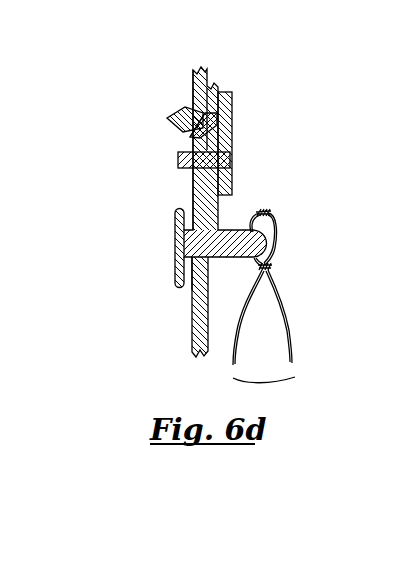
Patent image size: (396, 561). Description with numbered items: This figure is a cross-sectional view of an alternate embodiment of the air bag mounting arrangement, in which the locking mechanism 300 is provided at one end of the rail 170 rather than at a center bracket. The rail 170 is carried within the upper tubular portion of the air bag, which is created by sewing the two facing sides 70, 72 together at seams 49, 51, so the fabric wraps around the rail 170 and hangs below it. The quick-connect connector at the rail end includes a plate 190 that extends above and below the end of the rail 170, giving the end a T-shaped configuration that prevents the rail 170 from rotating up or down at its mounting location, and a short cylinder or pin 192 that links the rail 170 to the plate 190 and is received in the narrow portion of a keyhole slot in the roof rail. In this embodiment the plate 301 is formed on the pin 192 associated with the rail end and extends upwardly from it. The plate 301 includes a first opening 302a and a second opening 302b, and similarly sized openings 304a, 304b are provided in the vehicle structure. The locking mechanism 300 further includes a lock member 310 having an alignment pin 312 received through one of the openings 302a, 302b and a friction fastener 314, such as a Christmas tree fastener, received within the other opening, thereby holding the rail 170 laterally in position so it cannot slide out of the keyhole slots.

The locking mechanism 300 is at (160, 198).
The plate 301 is at (172, 212).
The first opening 302a is at (190, 192).
The second opening 302b is at (210, 68).
The opening 304a is at (185, 118).
The opening 304b is at (180, 108).
The lock member 310 is at (233, 100).
The alignment pin 312 is at (203, 172).
The friction fastener 314 is at (195, 133).
The plate 190 is at (178, 288).
The pin 192 is at (192, 260).
The seam 51 is at (278, 226).
The rail 170 is at (272, 262).
The seam 49 is at (280, 284).
The facing side 72 is at (292, 362).
The facing side 70 is at (232, 368).